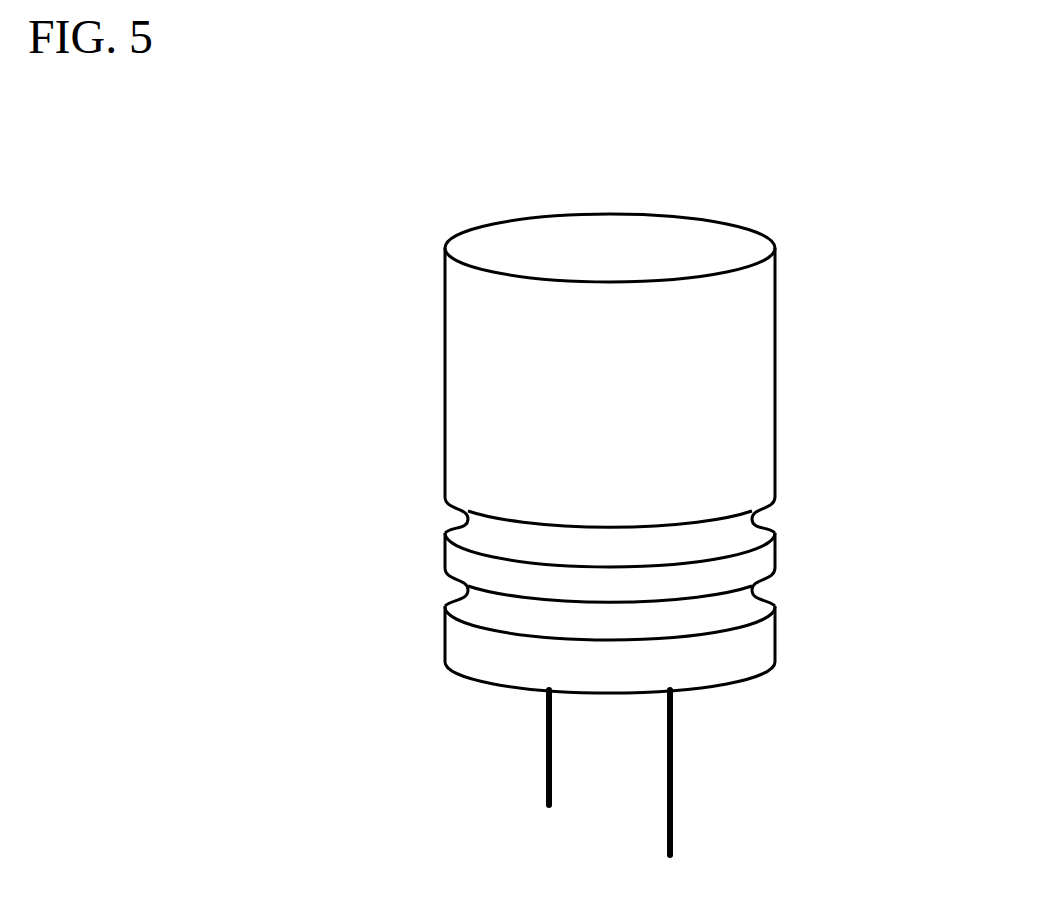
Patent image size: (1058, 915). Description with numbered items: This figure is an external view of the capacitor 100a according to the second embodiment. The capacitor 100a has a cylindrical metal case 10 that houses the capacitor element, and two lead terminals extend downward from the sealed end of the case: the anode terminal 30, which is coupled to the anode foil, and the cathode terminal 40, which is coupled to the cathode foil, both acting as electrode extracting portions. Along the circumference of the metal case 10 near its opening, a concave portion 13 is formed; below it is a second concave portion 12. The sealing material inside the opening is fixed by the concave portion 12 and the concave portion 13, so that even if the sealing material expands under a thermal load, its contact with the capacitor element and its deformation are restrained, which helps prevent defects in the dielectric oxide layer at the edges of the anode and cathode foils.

The capacitor 100a is at (850, 432).
The metal case 10 is at (776, 334).
The concave portion 13 is at (452, 527).
The concave portion 12 is at (452, 602).
The cathode terminal 40 is at (552, 776).
The anode terminal 30 is at (674, 822).